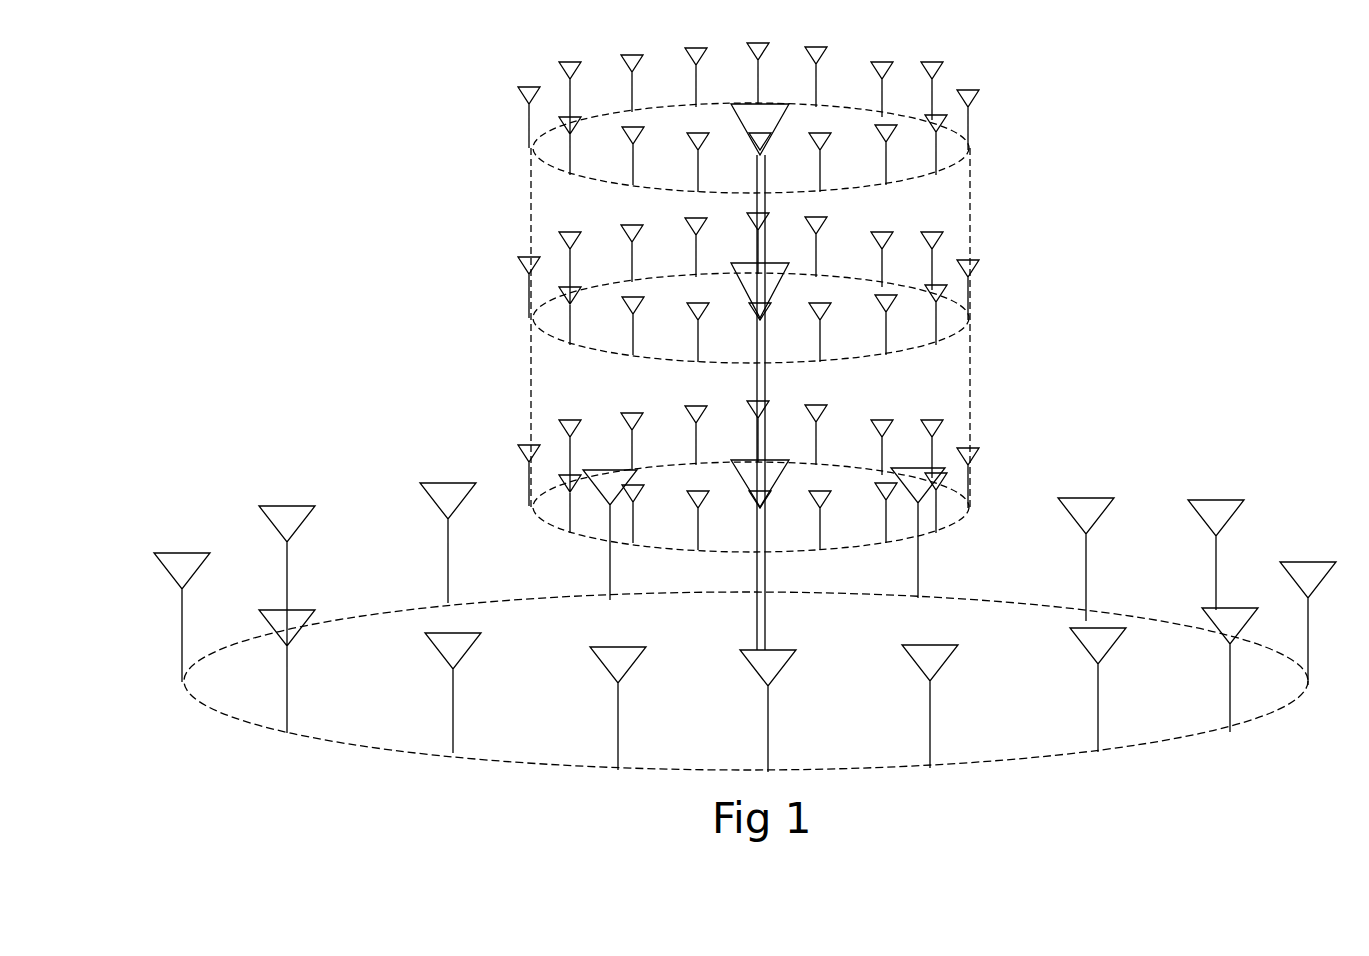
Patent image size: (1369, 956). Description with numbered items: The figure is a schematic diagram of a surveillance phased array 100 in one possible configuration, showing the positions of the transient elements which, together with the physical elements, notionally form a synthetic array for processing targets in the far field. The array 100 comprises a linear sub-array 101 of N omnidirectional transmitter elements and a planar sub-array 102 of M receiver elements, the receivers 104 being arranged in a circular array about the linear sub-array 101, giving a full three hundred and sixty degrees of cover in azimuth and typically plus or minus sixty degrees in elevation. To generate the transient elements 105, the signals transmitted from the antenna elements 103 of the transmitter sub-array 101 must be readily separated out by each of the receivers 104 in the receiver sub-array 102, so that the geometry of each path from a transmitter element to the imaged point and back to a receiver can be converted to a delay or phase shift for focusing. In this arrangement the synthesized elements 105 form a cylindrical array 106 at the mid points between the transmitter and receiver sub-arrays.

The phased array 100 is at (733, 430).
The linear sub-array 101 is at (752, 385).
The planar sub-array 102 is at (375, 745).
The antenna elements 103 is at (760, 477).
The receivers 104 is at (425, 488).
The transient elements 105 is at (530, 260).
The cylindrical array 106 is at (970, 188).